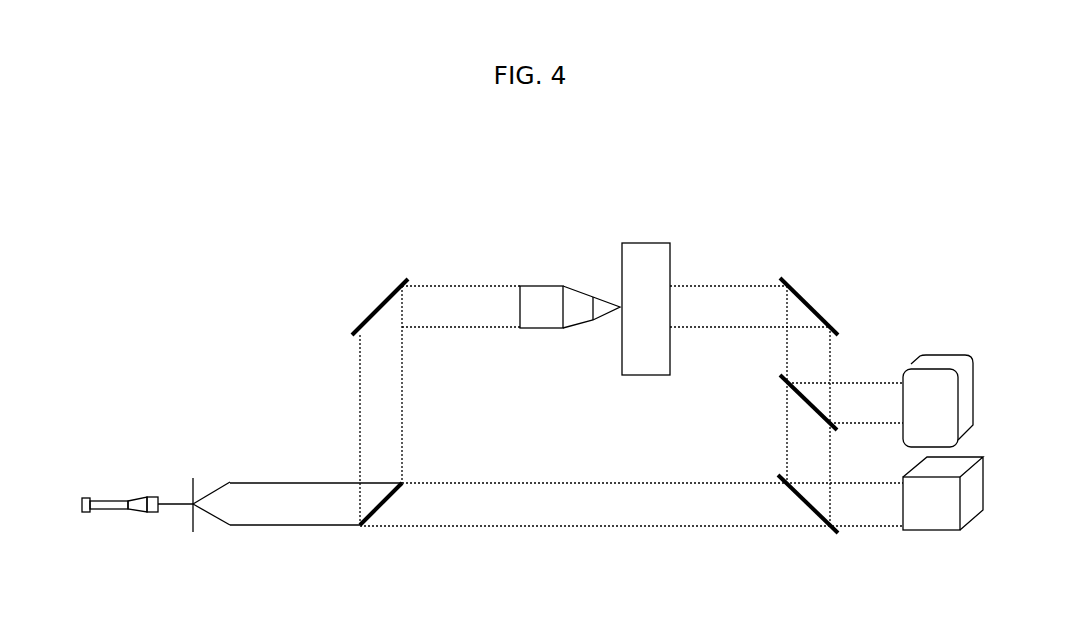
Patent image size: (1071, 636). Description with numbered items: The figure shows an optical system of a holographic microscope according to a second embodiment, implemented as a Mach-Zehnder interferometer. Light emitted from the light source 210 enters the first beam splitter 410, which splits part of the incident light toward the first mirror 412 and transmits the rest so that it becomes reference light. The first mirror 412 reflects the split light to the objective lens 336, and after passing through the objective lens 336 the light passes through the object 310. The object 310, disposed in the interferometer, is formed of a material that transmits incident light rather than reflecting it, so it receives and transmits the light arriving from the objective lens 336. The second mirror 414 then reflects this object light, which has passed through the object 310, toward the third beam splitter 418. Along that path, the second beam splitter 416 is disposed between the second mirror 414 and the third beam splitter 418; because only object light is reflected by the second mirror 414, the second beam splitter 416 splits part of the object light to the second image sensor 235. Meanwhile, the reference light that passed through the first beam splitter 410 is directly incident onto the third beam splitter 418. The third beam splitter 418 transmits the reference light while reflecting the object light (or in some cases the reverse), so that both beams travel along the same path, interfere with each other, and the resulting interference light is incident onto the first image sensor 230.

The light source 210 is at (108, 497).
The first beam splitter 410 is at (385, 505).
The first mirror 412 is at (372, 302).
The objective lens 336 is at (540, 285).
The object 310 is at (637, 243).
The second mirror 414 is at (813, 303).
The second beam splitter 416 is at (800, 398).
The third beam splitter 418 is at (807, 505).
The second image sensor 235 is at (945, 353).
The first image sensor 230 is at (933, 532).